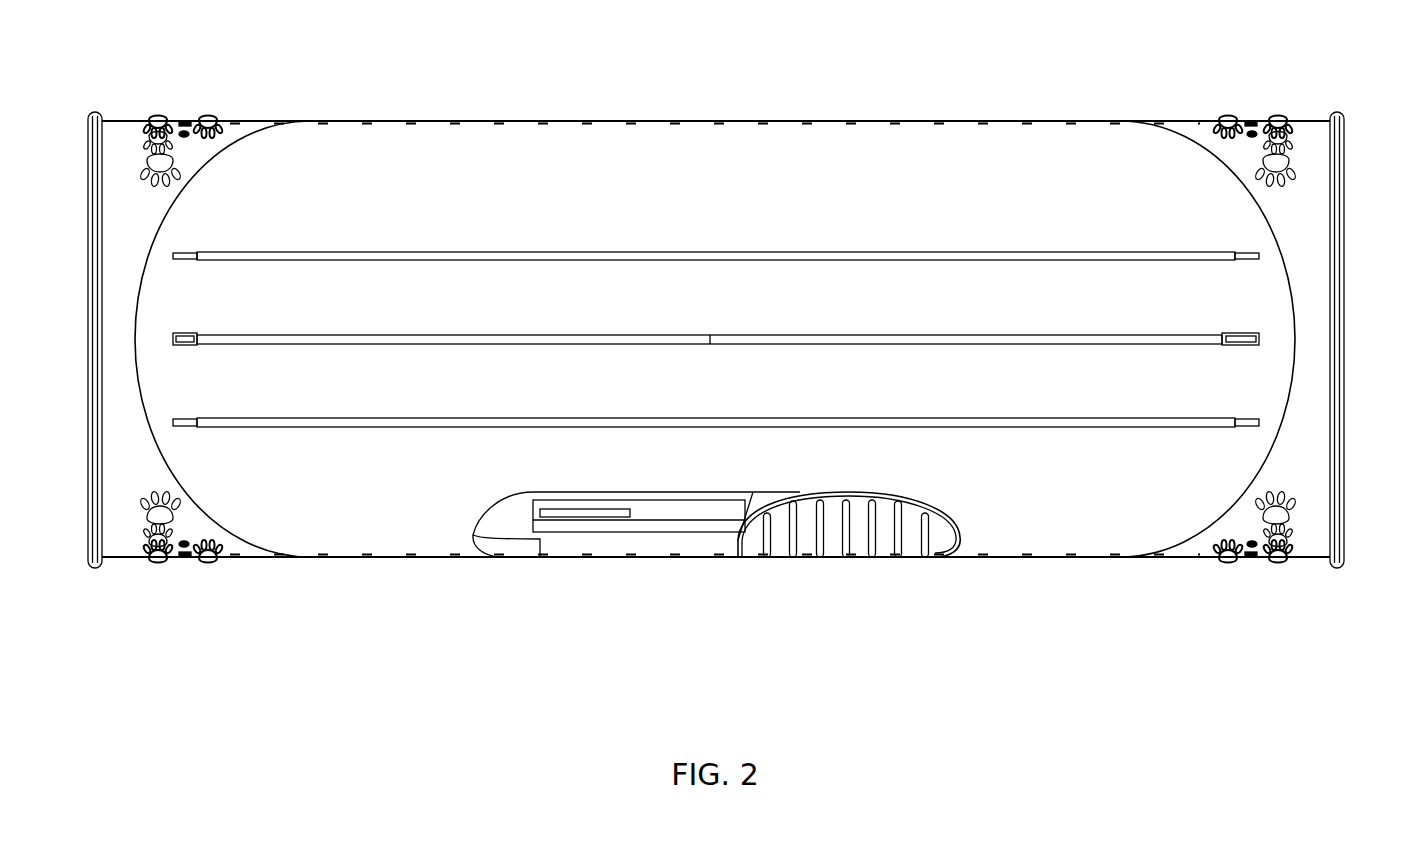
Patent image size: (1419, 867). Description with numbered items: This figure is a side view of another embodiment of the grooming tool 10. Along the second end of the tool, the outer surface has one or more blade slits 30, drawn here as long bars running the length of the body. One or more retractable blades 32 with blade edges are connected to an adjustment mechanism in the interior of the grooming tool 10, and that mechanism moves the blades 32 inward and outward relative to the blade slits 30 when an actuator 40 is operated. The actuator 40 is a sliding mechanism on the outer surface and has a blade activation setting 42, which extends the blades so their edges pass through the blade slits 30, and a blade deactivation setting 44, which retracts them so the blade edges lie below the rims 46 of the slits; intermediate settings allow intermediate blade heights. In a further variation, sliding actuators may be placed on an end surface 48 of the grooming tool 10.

The grooming tool 10 is at (566, 594).
The blade slits 30 is at (1098, 351).
The retractable blades 32 is at (350, 334).
The actuator 40 is at (830, 548).
The blade activation setting 42 is at (486, 503).
The blade deactivation setting 44 is at (957, 506).
The rims 46 is at (1247, 334).
The end surface 48 is at (1350, 425).